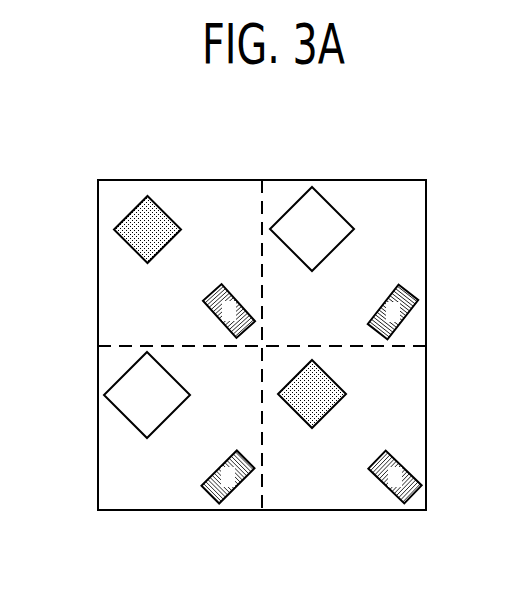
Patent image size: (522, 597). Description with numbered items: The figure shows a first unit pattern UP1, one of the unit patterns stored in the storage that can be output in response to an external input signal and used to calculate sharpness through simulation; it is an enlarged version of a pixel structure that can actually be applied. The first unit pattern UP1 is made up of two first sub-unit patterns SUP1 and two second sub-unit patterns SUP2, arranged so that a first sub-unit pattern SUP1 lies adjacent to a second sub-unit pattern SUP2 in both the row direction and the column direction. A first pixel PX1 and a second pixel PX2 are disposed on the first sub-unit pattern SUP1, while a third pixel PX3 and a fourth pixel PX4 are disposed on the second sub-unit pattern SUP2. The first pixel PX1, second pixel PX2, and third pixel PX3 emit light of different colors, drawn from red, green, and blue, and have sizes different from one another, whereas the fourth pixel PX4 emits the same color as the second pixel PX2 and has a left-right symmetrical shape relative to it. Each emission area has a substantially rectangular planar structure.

The first unit pattern UP1 is at (428, 156).
The first sub-unit pattern SUP1 is at (205, 195).
The second sub-unit pattern SUP2 is at (368, 195).
The first pixel PX1 is at (128, 208).
The second pixel PX2 is at (207, 308).
The third pixel PX3 is at (290, 205).
The fourth pixel PX4 is at (410, 292).